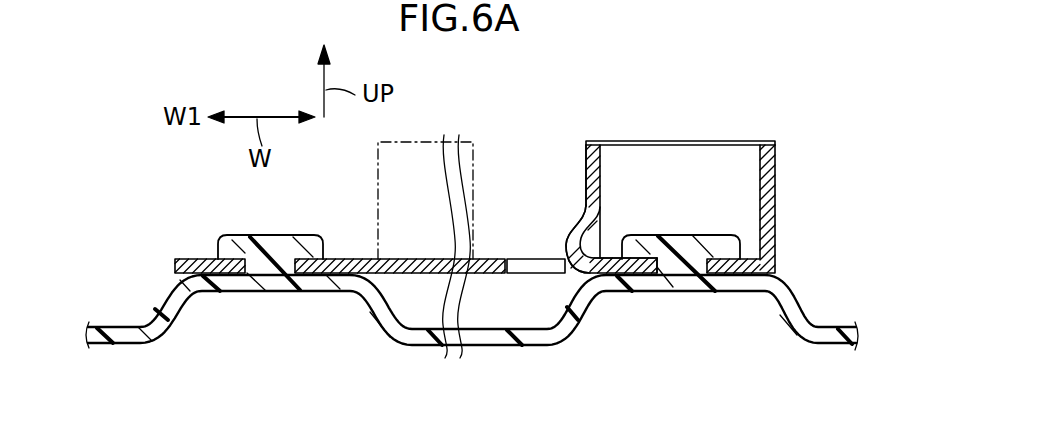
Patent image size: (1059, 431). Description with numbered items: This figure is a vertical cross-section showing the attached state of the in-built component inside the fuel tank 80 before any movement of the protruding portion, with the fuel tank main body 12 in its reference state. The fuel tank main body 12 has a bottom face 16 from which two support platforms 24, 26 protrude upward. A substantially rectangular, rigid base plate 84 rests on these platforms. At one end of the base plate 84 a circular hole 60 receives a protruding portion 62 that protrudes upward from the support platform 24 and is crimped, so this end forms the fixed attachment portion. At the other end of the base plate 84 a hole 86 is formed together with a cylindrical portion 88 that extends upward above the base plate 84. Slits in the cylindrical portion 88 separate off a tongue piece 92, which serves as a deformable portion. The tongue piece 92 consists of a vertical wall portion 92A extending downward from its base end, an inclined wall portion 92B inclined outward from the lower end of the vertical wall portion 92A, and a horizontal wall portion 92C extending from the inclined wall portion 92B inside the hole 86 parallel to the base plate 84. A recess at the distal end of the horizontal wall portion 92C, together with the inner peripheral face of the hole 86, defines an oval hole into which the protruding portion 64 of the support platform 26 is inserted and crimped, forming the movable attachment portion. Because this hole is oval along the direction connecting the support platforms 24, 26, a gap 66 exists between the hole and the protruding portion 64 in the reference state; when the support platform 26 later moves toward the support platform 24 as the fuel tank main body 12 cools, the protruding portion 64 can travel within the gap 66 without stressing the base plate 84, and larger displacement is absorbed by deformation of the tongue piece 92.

The fuel tank main body 12 is at (472, 339).
The fuel tank 80 is at (543, 350).
The bottom face 16 is at (487, 346).
The support platform 24 is at (201, 292).
The support platform 26 is at (737, 292).
The hole 60 is at (280, 268).
The protruding portion 62 is at (277, 245).
The protruding portion 64 is at (687, 248).
The gap 66 is at (650, 263).
The base plate 84 is at (344, 260).
The hole 86 is at (522, 258).
The cylindrical portion 88 is at (768, 140).
The tongue piece 92 is at (507, 67).
The vertical wall portion 92A is at (587, 188).
The inclined wall portion 92B is at (578, 230).
The horizontal wall portion 92C is at (603, 257).